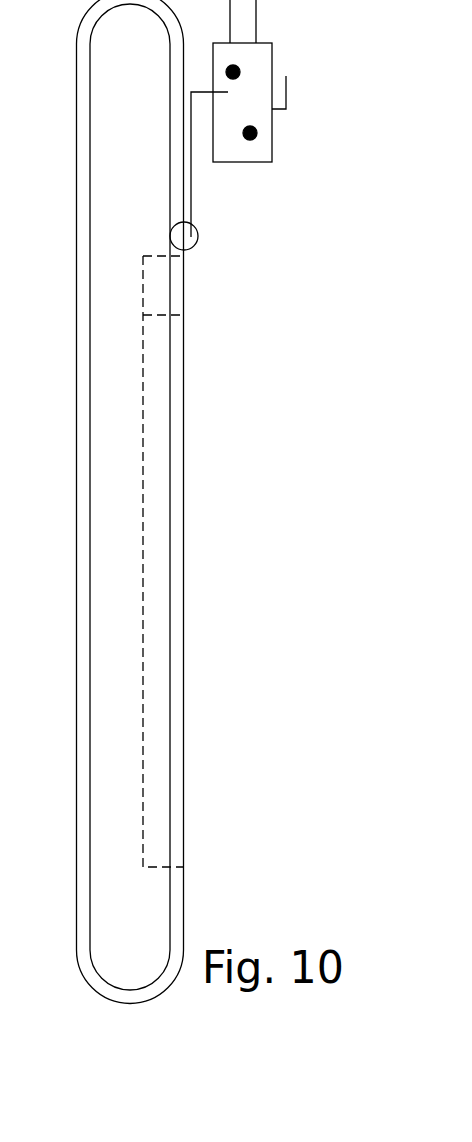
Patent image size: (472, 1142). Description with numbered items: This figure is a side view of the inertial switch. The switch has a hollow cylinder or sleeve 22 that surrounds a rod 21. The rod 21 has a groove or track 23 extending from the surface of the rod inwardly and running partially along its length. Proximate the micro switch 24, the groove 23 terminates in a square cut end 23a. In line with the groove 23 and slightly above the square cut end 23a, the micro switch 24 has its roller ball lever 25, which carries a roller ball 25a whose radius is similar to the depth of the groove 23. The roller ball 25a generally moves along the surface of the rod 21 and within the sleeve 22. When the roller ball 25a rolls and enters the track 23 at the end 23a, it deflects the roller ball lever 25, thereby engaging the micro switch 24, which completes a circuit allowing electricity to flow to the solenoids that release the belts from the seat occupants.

The rod 21 is at (117, 622).
The sleeve 22 is at (177, 533).
The groove 23 is at (157, 408).
The square cut end of groove 23a is at (175, 295).
The micro switch 24 is at (256, 83).
The roller ball lever 25 is at (173, 238).
The roller ball 25a is at (193, 248).